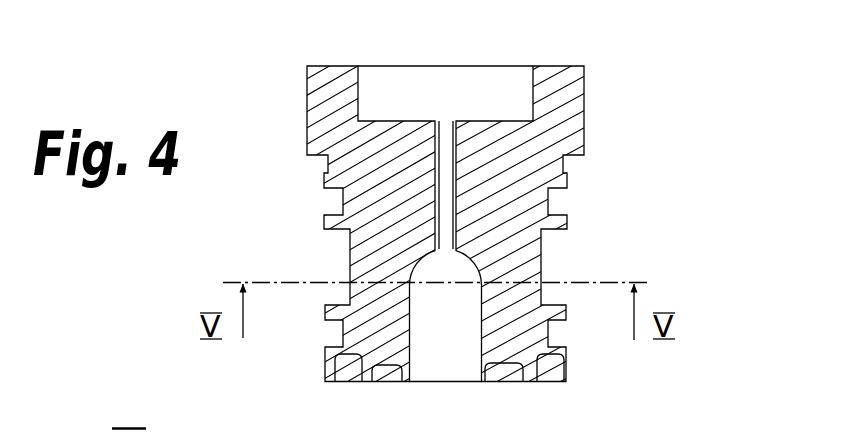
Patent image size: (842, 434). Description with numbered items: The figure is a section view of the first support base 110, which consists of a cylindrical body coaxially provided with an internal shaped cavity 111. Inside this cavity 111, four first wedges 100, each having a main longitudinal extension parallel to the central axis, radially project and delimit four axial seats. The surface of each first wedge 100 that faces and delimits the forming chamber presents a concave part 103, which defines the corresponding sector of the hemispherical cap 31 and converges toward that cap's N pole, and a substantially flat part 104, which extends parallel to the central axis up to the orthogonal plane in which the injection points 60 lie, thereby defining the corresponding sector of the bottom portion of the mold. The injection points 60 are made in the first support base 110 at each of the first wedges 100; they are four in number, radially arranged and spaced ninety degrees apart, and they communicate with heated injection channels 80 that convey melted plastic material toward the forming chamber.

The first support base 110 is at (603, 138).
The hemispherical cap 31 is at (464, 246).
The concave part 103 is at (506, 251).
The substantially flat part 104 is at (410, 282).
The internal shaped cavity 111 is at (464, 345).
The first wedge 100 is at (378, 335).
The heated injection channel 80 is at (346, 372).
The injection point 60 is at (397, 381).